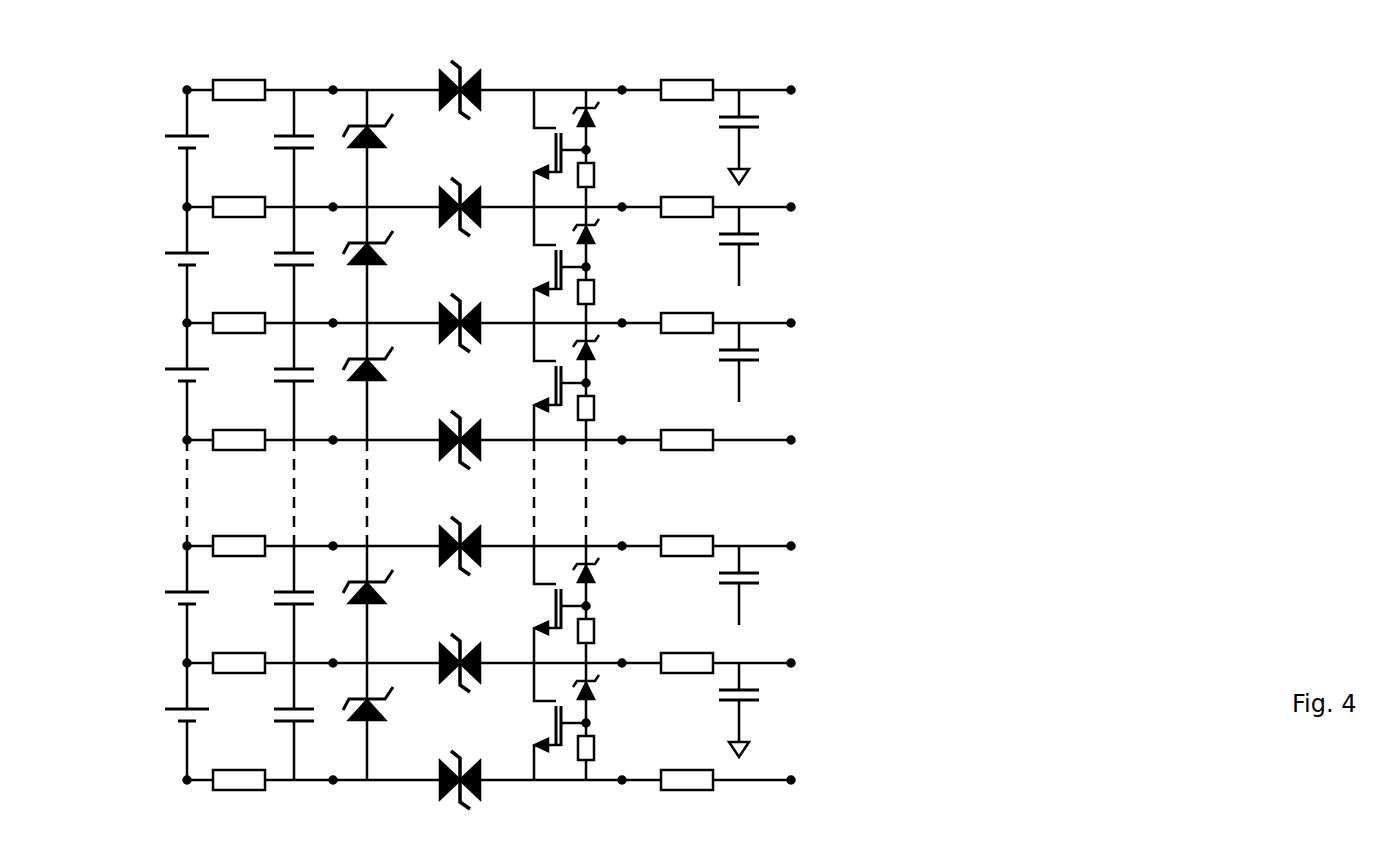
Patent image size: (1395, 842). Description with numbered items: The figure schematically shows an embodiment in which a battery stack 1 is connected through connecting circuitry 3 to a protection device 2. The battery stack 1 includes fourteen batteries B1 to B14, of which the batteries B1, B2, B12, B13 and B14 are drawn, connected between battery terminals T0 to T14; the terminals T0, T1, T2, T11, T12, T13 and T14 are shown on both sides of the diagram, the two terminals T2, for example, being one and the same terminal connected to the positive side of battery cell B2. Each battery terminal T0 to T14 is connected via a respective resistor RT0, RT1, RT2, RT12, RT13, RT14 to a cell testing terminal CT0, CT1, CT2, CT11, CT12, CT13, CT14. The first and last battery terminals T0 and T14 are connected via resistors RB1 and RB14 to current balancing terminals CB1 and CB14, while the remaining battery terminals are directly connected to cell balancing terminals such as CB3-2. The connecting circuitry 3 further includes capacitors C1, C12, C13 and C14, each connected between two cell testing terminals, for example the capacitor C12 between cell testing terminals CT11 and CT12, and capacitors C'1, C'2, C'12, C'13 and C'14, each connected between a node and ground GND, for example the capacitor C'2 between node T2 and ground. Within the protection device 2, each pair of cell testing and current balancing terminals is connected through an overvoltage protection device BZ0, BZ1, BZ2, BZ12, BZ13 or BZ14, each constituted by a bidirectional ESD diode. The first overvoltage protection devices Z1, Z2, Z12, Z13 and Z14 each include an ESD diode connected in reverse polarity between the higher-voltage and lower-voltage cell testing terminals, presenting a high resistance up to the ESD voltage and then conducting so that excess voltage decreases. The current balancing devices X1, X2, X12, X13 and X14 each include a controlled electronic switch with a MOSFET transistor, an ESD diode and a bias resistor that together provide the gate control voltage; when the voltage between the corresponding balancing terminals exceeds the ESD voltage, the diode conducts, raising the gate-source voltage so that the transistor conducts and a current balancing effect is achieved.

The battery terminal T14 is at (185, 90).
The resistor RT14 is at (240, 79).
The cell testing terminal CT14 is at (333, 87).
The overvoltage protection device BZ14 is at (464, 70).
The current balancing terminal CB14 is at (622, 87).
The resistor RB14 is at (690, 79).
The battery terminal T13 is at (185, 207).
The resistor RT13 is at (240, 196).
The cell testing terminal CT13 is at (333, 204).
The overvoltage protection device BZ13 is at (464, 187).
The battery terminal T12 is at (185, 323).
The resistor RT12 is at (240, 312).
The cell testing terminal CT12 is at (333, 320).
The overvoltage protection device BZ12 is at (464, 303).
The battery terminal T11 is at (185, 440).
The cell testing terminal CT11 is at (333, 437).
The battery terminal T2 is at (185, 546).
The resistor RT2 is at (240, 535).
The cell testing terminal CT2 is at (333, 543).
The overvoltage protection device BZ2 is at (464, 526).
The cell balancing terminal CB3-2 is at (622, 543).
The battery terminal T1 is at (185, 663).
The resistor RT1 is at (240, 652).
The cell testing terminal CT1 is at (333, 660).
The overvoltage protection device BZ1 is at (464, 643).
The battery terminal T0 is at (185, 780).
The resistor RT0 is at (237, 790).
The cell testing terminal CT0 is at (333, 777).
The overvoltage protection device BZ0 is at (464, 760).
The current balancing terminal CB1 is at (622, 783).
The resistor RB1 is at (688, 769).
The battery B14 is at (164, 141).
The capacitor C14 is at (272, 140).
The first overvoltage protection device Z14 is at (387, 138).
The current balancing device X14 is at (610, 137).
The capacitor C'14 is at (788, 129).
The battery B13 is at (164, 258).
The capacitor C13 is at (265, 257).
The first overvoltage protection device Z13 is at (387, 255).
The current balancing device X13 is at (610, 254).
The capacitor C'13 is at (788, 246).
The battery B12 is at (164, 374).
The capacitor C12 is at (271, 373).
The first overvoltage protection device Z12 is at (387, 371).
The current balancing device X12 is at (610, 370).
The capacitor C'12 is at (788, 362).
The battery B2 is at (164, 597).
The first overvoltage protection device Z2 is at (385, 596).
The current balancing device X2 is at (615, 593).
The capacitor C'2 is at (782, 585).
The battery B1 is at (164, 714).
The capacitor C1 is at (279, 713).
The first overvoltage protection device Z1 is at (390, 713).
The current balancing device X1 is at (618, 710).
The capacitor C'1 is at (782, 702).
The ground GND is at (752, 178).
The battery stack 1 is at (108, 506).
The protection device 2 is at (446, 506).
The connecting circuitry 3 is at (256, 592).